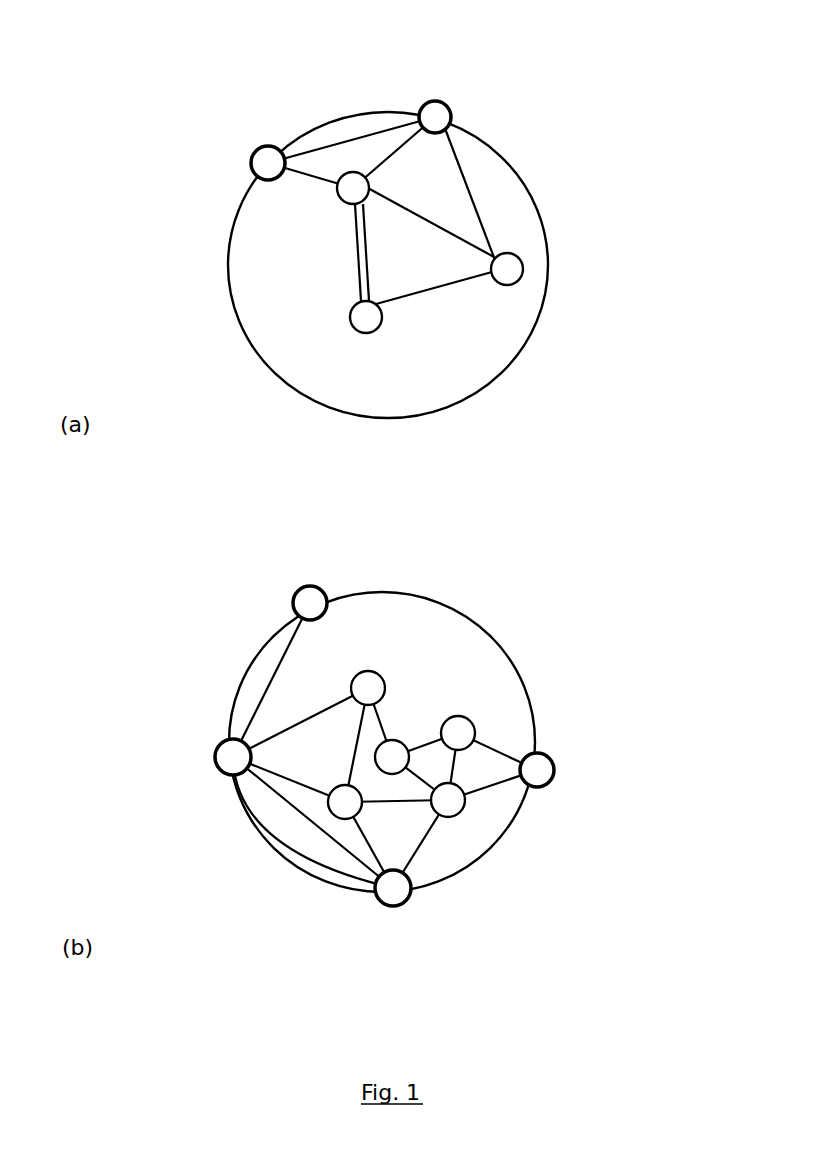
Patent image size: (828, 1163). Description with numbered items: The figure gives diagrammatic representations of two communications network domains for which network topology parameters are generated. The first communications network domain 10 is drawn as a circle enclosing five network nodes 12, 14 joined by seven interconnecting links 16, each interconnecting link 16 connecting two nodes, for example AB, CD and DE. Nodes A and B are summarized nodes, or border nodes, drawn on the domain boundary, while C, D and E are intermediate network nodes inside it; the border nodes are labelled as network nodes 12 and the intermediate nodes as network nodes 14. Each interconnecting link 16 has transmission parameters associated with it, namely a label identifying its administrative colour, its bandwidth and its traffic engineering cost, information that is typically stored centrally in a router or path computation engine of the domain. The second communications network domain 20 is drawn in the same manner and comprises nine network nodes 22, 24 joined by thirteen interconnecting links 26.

The communications network domain 10 is at (544, 114).
The network node 12 is at (261, 146).
The network node 14 is at (342, 202).
The interconnecting link 16 is at (475, 202).
The communications network domain 20 is at (600, 612).
The network node 22 is at (313, 585).
The network node 24 is at (476, 720).
The interconnecting link 26 is at (315, 836).